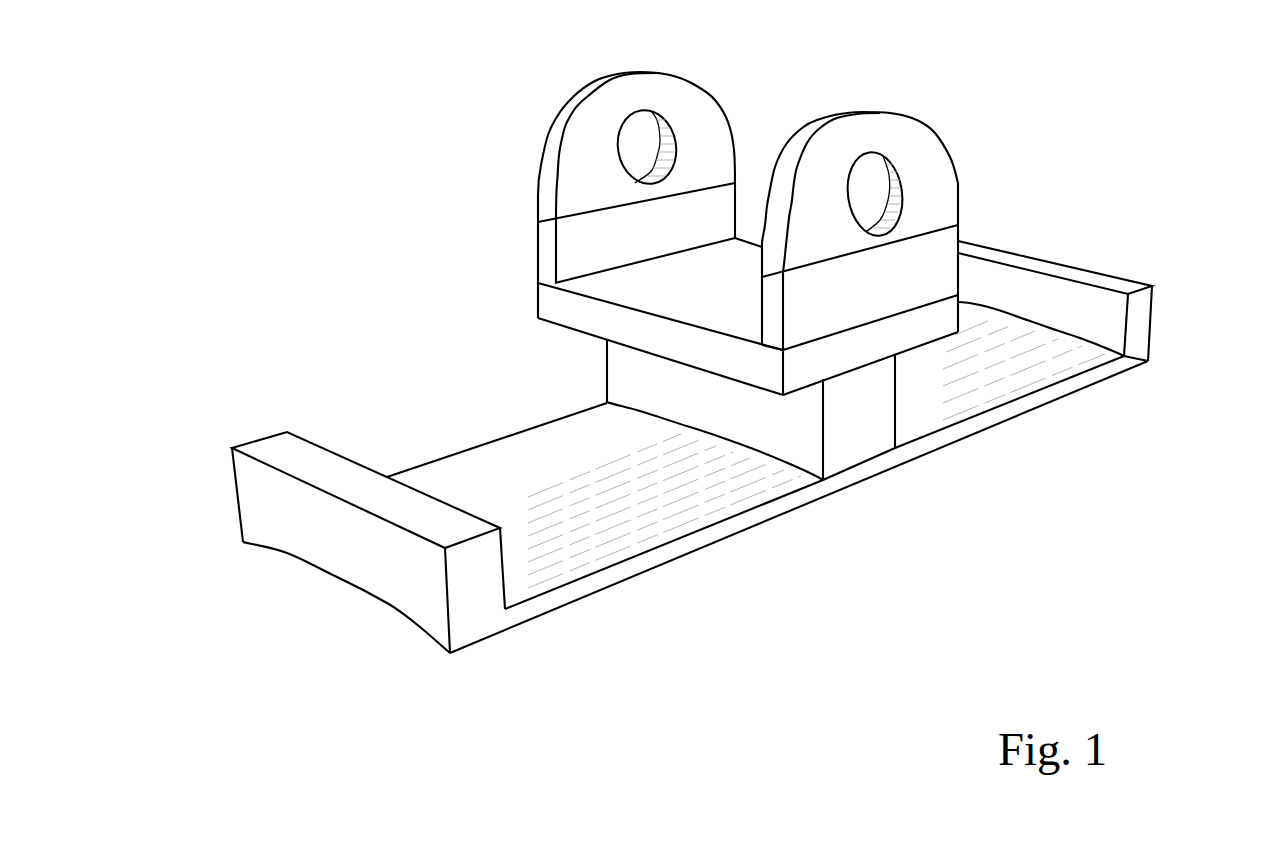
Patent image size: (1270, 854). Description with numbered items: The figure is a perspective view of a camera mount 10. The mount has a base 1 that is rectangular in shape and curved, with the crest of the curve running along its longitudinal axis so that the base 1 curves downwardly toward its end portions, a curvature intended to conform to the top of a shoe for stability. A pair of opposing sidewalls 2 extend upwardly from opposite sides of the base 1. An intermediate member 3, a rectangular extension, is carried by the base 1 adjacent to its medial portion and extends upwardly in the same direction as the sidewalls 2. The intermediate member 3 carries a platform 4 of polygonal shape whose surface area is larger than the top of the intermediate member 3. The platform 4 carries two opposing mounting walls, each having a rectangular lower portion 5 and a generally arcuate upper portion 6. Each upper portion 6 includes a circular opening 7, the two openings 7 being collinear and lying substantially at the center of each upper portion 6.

The base 1 is at (597, 543).
The pair of opposing sidewalls 2 is at (278, 450).
The intermediate member 3 is at (620, 368).
The platform 4 is at (632, 290).
The lower portion 5 is at (720, 207).
The upper portion 6 is at (708, 137).
The opening 7 is at (650, 160).
The camera mount 10 is at (1118, 120).